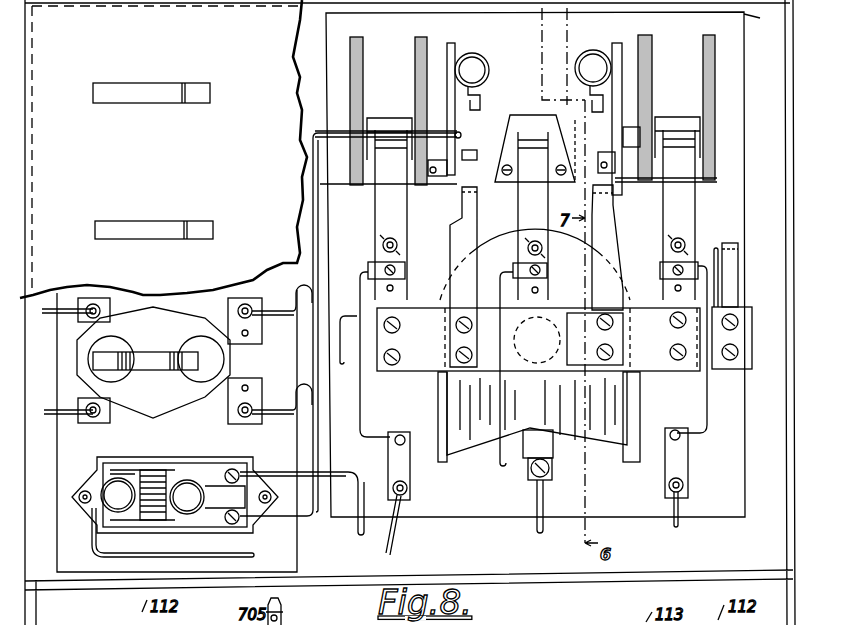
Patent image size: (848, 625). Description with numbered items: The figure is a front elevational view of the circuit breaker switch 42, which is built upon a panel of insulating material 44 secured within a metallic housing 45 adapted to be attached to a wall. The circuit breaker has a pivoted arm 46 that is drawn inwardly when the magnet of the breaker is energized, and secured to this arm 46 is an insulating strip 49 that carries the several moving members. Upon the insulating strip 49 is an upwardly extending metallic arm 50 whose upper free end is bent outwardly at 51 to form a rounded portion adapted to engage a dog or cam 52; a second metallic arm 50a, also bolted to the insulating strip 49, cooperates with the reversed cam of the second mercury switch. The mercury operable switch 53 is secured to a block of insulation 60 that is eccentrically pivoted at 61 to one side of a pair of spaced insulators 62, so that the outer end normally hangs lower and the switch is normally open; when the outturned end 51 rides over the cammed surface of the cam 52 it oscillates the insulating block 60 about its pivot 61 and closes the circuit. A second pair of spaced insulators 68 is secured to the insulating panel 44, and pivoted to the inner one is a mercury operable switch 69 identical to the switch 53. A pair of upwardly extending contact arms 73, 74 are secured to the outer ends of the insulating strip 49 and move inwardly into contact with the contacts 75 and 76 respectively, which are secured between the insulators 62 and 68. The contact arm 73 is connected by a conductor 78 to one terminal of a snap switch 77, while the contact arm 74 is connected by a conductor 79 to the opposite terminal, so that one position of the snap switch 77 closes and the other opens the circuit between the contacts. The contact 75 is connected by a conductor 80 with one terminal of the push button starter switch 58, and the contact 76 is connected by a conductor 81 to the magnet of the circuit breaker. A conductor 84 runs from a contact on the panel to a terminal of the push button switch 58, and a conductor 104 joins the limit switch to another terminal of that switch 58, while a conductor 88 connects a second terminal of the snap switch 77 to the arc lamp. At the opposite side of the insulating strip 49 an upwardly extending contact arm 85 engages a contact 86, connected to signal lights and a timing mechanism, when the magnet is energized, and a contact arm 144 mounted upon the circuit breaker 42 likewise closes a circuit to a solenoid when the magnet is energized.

The circuit breaker switch 42 is at (615, 388).
The insulating panel 44 is at (760, 21).
The metallic housing 45 is at (790, 418).
The arm 46 is at (478, 440).
The insulating strip 49 is at (740, 337).
The metallic arm 50 is at (456, 245).
The metallic arm 50a is at (600, 225).
The outturned end 51 is at (455, 198).
The cam 52 is at (470, 158).
The mercury operable switch 53 is at (482, 58).
The push button starter switch 58 is at (185, 468).
The insulating block 60 is at (455, 50).
The pivot 61 is at (465, 133).
The insulators 62 is at (415, 43).
The insulators 68 is at (703, 40).
The mercury operable switch 69 is at (592, 58).
The contact arm 73 is at (387, 215).
The contact arm 74 is at (679, 215).
The contact 75 is at (380, 118).
The contact 76 is at (672, 118).
The snap switch 77 is at (145, 352).
The conductor 78 is at (395, 535).
The conductor 79 is at (680, 522).
The conductor 80 is at (318, 224).
The conductor 81 is at (268, 300).
The conductor 84 is at (340, 472).
The contact arm 85 is at (732, 262).
The contact 86 is at (716, 247).
The conductor 88 is at (272, 400).
The conductor 104 is at (172, 557).
The contact arm 144 is at (535, 222).